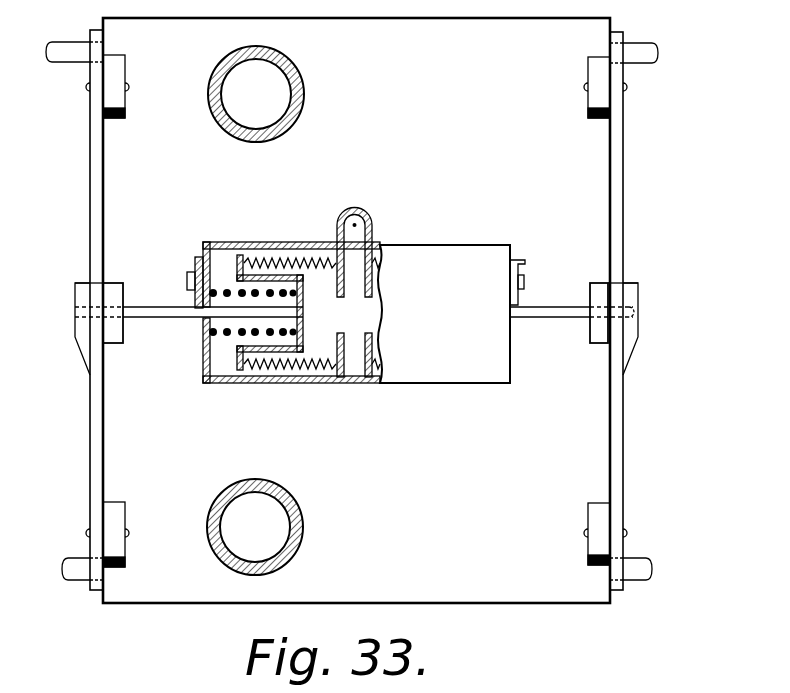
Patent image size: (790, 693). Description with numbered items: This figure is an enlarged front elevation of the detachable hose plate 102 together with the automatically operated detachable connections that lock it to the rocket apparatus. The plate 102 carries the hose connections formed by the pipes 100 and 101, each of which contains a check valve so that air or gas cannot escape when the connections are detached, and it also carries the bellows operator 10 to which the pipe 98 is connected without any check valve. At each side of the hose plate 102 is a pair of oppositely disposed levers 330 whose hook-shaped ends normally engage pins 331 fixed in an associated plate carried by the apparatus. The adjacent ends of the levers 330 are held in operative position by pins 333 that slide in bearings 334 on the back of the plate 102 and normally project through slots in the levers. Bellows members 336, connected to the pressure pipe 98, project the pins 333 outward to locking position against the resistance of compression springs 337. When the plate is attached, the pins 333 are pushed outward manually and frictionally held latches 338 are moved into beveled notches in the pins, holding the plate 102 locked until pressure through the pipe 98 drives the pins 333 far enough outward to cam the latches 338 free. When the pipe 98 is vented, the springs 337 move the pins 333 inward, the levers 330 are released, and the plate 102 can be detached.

The bellows operator 10 is at (430, 396).
The pipe 98 is at (362, 213).
The pipe 100 is at (303, 98).
The pipe 101 is at (303, 528).
The detachable hose plate 102 is at (356, 310).
The levers 330 is at (99, 187).
The pins 331 is at (78, 60).
The pins 333 is at (183, 313).
The bearings 334 is at (112, 343).
The bellows members 336 is at (285, 372).
The compression springs 337 is at (228, 336).
The latches 338 is at (196, 272).